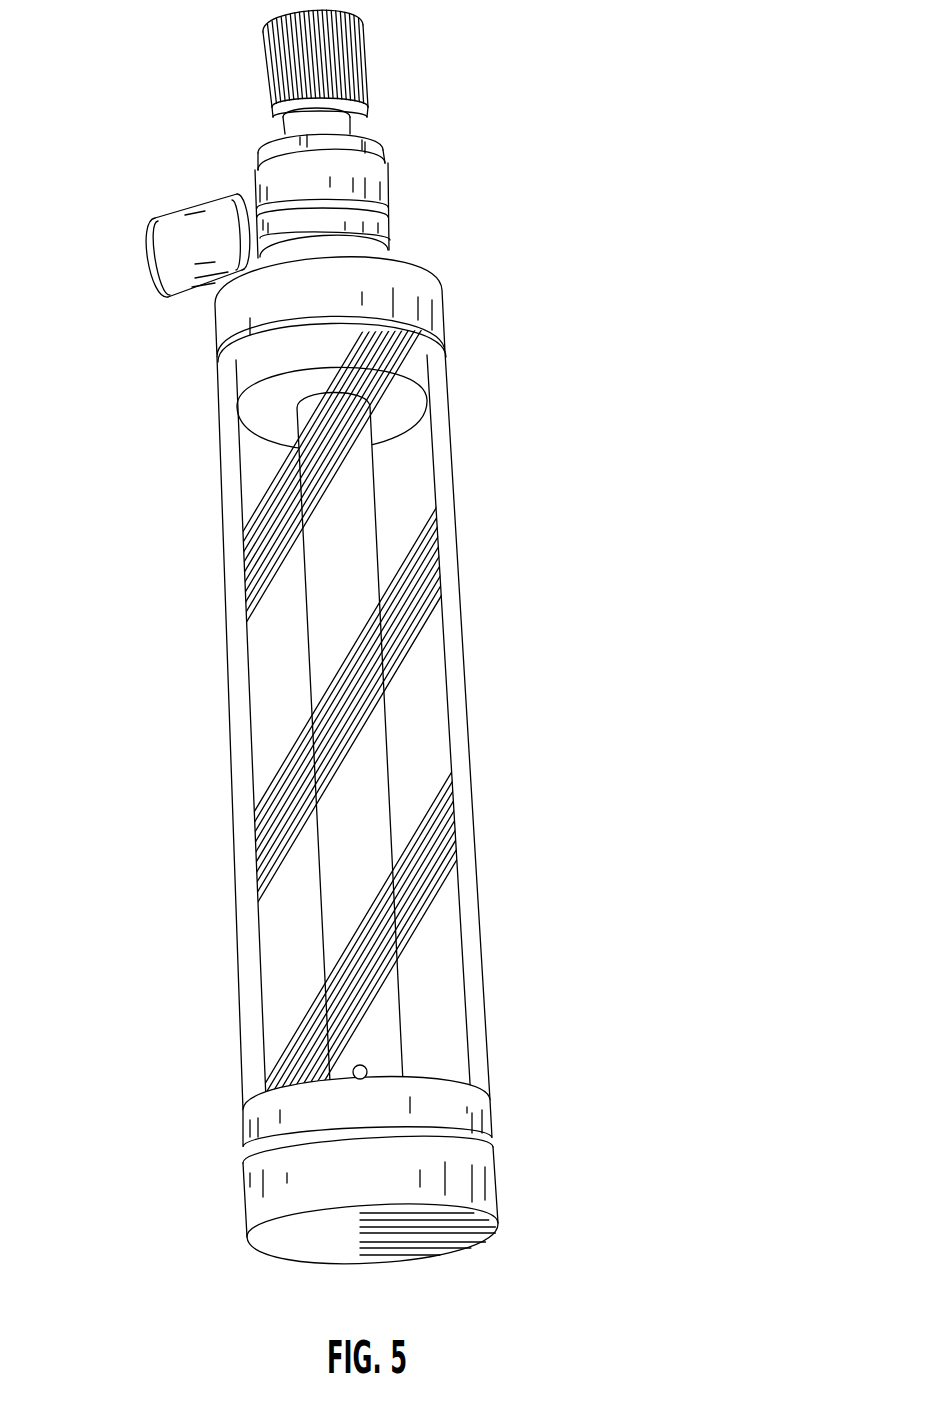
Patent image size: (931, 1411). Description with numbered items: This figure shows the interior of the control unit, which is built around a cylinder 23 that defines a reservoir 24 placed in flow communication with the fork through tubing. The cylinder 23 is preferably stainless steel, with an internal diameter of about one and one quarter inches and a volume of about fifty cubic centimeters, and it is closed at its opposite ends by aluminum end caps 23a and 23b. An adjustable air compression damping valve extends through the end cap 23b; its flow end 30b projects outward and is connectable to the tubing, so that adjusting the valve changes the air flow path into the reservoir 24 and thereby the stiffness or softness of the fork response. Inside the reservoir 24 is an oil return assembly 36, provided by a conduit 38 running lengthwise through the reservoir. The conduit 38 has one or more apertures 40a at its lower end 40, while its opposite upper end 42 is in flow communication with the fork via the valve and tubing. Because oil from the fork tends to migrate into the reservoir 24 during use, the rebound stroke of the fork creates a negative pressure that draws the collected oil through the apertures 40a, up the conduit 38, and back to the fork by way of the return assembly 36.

The cylinder 23 is at (472, 667).
The end cap 23a is at (487, 1185).
The end cap 23b is at (433, 315).
The reservoir 24 is at (408, 532).
The flow end 30b is at (197, 202).
The oil return assembly 36 is at (408, 985).
The conduit 38 is at (388, 795).
The lower end 40 is at (432, 1110).
The aperture 40a is at (367, 1070).
The upper end 42 is at (373, 447).